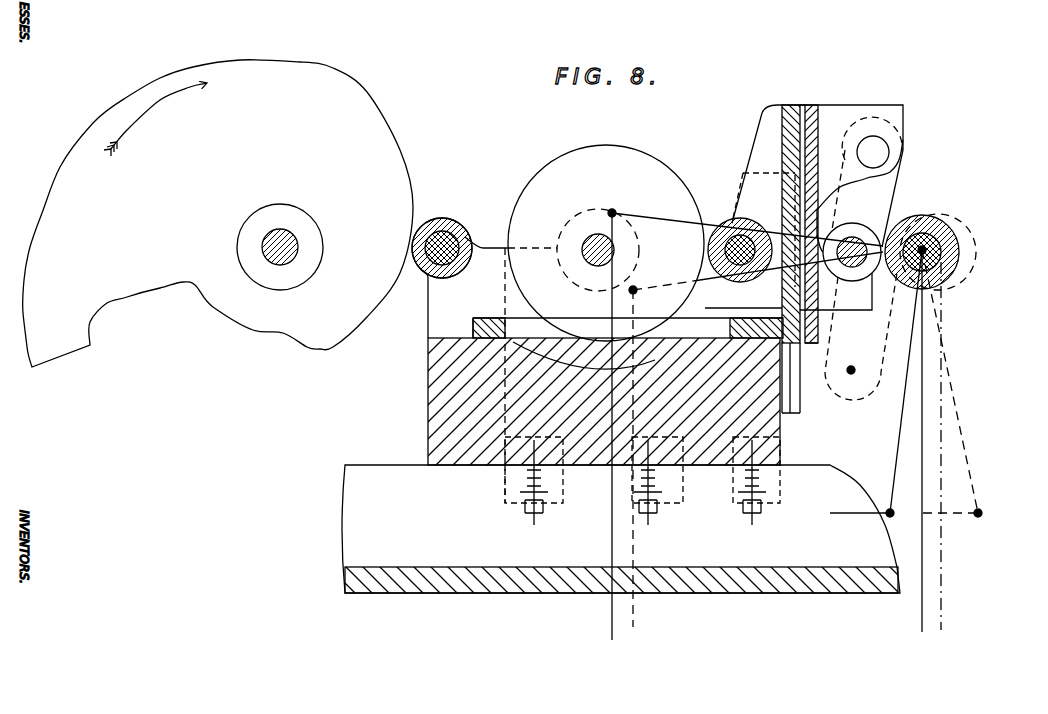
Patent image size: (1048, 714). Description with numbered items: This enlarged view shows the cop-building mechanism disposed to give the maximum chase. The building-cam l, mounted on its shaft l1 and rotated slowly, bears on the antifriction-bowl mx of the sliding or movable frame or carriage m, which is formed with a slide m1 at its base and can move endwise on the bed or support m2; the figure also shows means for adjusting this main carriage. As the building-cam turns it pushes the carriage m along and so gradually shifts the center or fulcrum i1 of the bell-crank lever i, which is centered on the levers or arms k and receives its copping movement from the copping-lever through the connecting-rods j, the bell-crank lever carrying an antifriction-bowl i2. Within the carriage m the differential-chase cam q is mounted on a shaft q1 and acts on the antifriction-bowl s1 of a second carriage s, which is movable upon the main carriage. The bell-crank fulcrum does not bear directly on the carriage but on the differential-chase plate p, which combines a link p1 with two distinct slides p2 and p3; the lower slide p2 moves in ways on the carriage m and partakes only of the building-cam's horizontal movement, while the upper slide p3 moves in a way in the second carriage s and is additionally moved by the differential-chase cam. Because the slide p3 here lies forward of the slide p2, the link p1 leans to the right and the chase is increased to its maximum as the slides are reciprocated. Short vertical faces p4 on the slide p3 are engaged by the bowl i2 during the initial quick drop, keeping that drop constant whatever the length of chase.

The building-cam l is at (218, 213).
The building-cam shaft l1 is at (298, 243).
The sliding or movable frame or carriage m is at (484, 360).
The antifriction-bowl mx is at (458, 223).
The slide m1 is at (786, 487).
The bed or support m2 is at (621, 455).
The differential-chase cam q is at (695, 392).
The shaft q1 is at (585, 265).
The second carriage s is at (762, 312).
The antifriction-bowl s1 is at (725, 232).
The differential-chase plate p is at (932, 148).
The link p1 is at (898, 193).
The slide p2 is at (855, 296).
The slide p3 is at (860, 159).
The short vertical faces p4 is at (905, 118).
The bell-crank lever i is at (905, 423).
The center or fulcrum i1 is at (934, 237).
The antifriction-bowl i2 is at (1010, 247).
The connecting-rods j is at (629, 551).
The levers or arms k is at (928, 555).